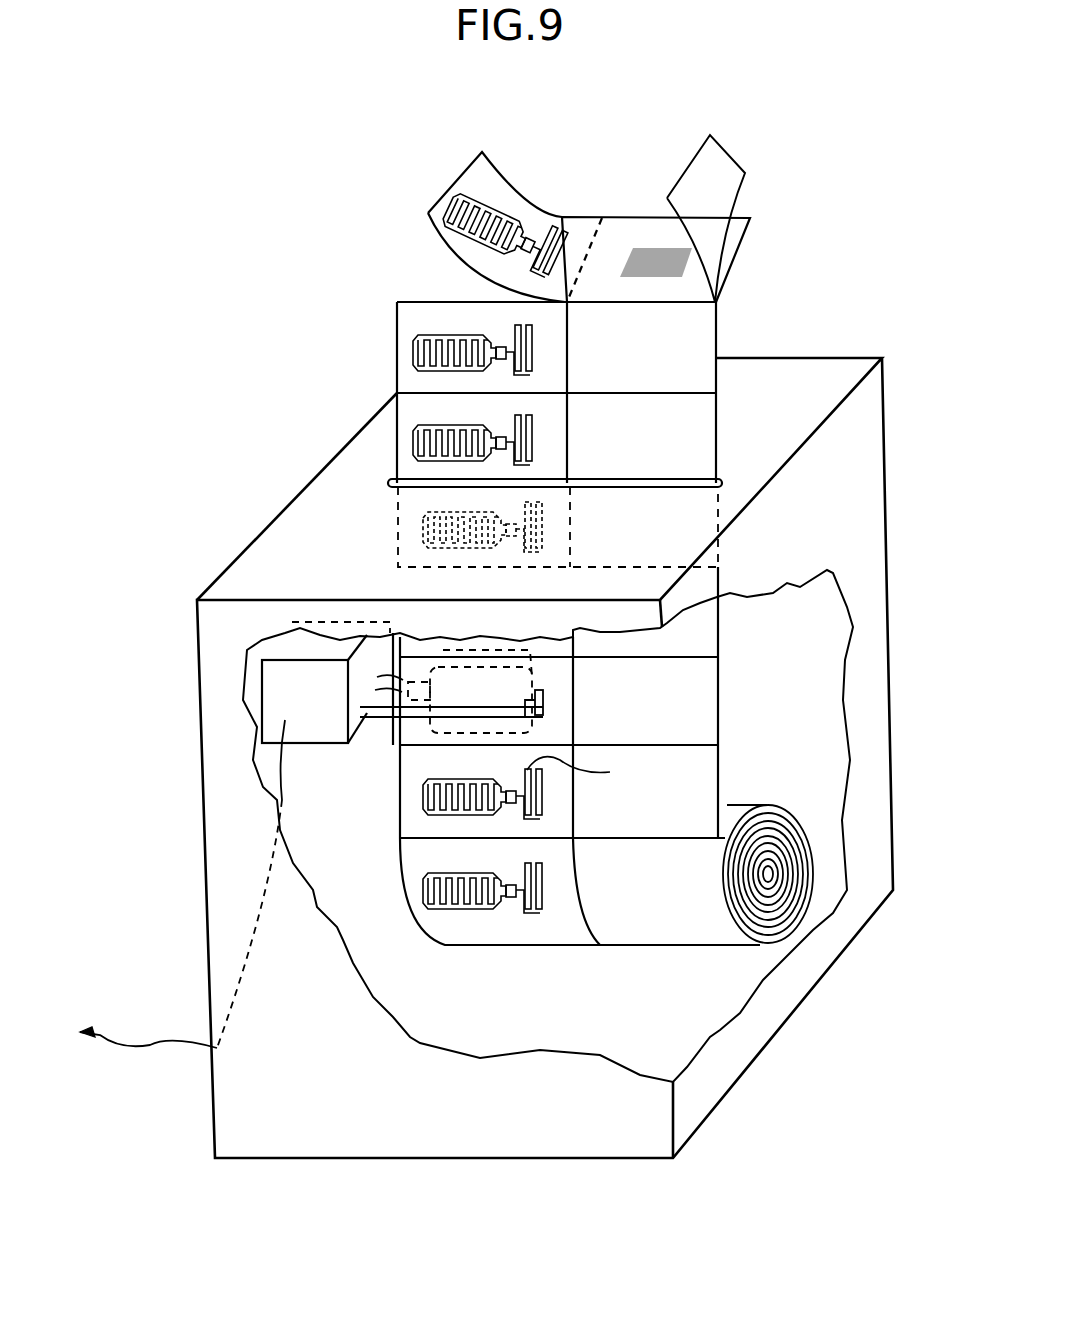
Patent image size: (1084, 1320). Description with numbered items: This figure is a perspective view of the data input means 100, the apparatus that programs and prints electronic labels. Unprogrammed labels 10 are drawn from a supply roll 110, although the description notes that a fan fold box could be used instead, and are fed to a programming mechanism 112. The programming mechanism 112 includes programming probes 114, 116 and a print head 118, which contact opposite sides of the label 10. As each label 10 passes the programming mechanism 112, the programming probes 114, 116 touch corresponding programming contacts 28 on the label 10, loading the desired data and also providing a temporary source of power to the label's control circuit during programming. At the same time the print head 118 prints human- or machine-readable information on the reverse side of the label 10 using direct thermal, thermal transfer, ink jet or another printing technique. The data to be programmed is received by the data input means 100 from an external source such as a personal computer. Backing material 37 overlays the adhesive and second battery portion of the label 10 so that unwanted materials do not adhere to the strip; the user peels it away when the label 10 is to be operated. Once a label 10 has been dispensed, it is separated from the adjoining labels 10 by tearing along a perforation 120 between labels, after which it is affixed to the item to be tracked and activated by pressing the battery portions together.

The label 10 is at (745, 258).
The programming contacts 28 is at (545, 762).
The backing material 37 is at (720, 162).
The data input means 100 is at (203, 840).
The supply roll 110 is at (790, 905).
The programming mechanism 112 is at (262, 688).
The programming probe 114 is at (548, 681).
The programming probe 116 is at (545, 712).
The print head 118 is at (447, 677).
The perforation 120 is at (400, 302).